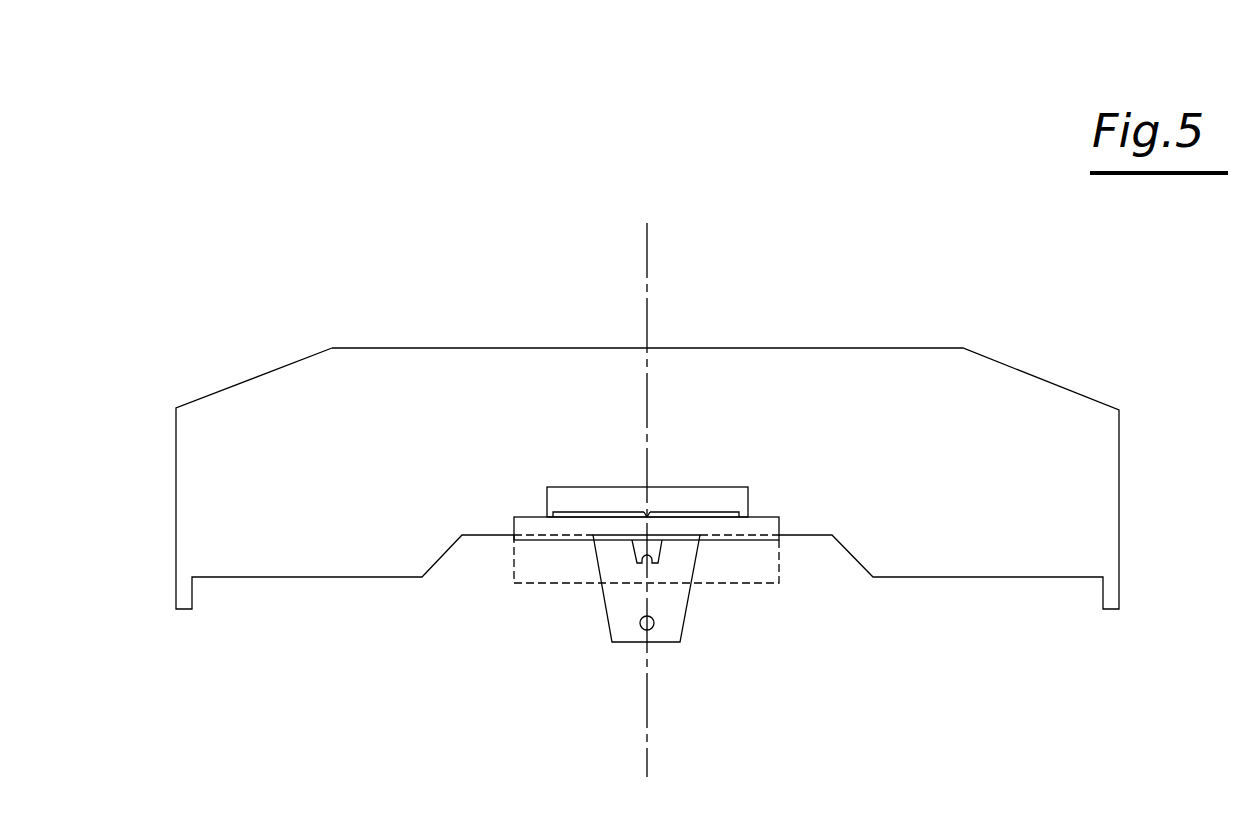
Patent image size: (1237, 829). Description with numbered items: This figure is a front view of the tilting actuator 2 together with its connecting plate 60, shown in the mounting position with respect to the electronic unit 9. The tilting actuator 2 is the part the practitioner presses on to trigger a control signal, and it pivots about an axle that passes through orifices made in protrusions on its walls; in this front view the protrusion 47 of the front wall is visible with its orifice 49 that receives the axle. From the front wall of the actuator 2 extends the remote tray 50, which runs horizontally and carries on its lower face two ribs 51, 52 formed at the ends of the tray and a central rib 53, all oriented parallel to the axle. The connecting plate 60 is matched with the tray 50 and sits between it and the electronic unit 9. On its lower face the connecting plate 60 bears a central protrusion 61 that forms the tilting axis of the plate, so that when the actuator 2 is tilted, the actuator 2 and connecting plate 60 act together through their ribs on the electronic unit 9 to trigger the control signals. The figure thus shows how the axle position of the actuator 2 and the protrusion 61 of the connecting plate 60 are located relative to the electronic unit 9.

The tilting actuator 2 is at (915, 390).
The electronic unit 9 is at (762, 562).
The protrusion 47 is at (673, 600).
The orifice 49 is at (653, 623).
The remote tray 50 is at (692, 497).
The rib 51 is at (550, 515).
The rib 52 is at (745, 515).
The central rib 53 is at (647, 517).
The connecting plate 60 is at (619, 531).
The protrusion 61 is at (638, 549).